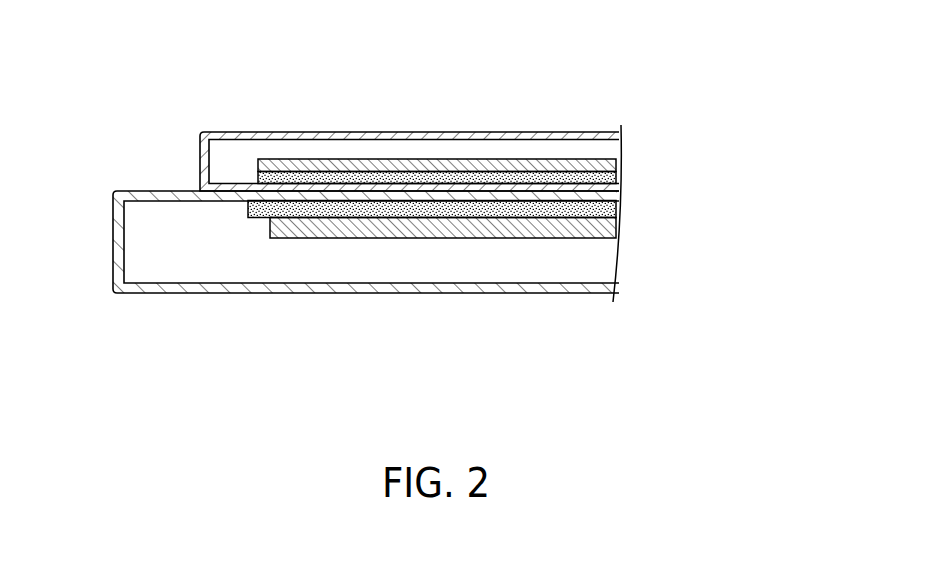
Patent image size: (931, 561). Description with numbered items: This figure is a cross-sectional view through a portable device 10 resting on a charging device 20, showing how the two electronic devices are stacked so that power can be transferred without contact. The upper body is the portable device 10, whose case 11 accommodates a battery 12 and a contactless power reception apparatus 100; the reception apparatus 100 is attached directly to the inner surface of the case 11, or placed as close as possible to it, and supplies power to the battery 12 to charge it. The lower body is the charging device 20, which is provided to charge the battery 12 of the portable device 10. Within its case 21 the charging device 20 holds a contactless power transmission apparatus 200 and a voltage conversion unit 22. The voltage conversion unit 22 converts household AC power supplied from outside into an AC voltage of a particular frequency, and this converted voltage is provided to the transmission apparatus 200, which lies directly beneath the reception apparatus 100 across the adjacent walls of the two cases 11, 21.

The portable device 10 is at (473, 129).
The case 11 is at (247, 183).
The battery 12 is at (616, 162).
The contactless power reception apparatus 100 is at (616, 177).
The contactless power transmission apparatus 200 is at (616, 208).
The voltage conversion unit 22 is at (616, 232).
The charging device 20 is at (474, 306).
The case 21 is at (232, 288).